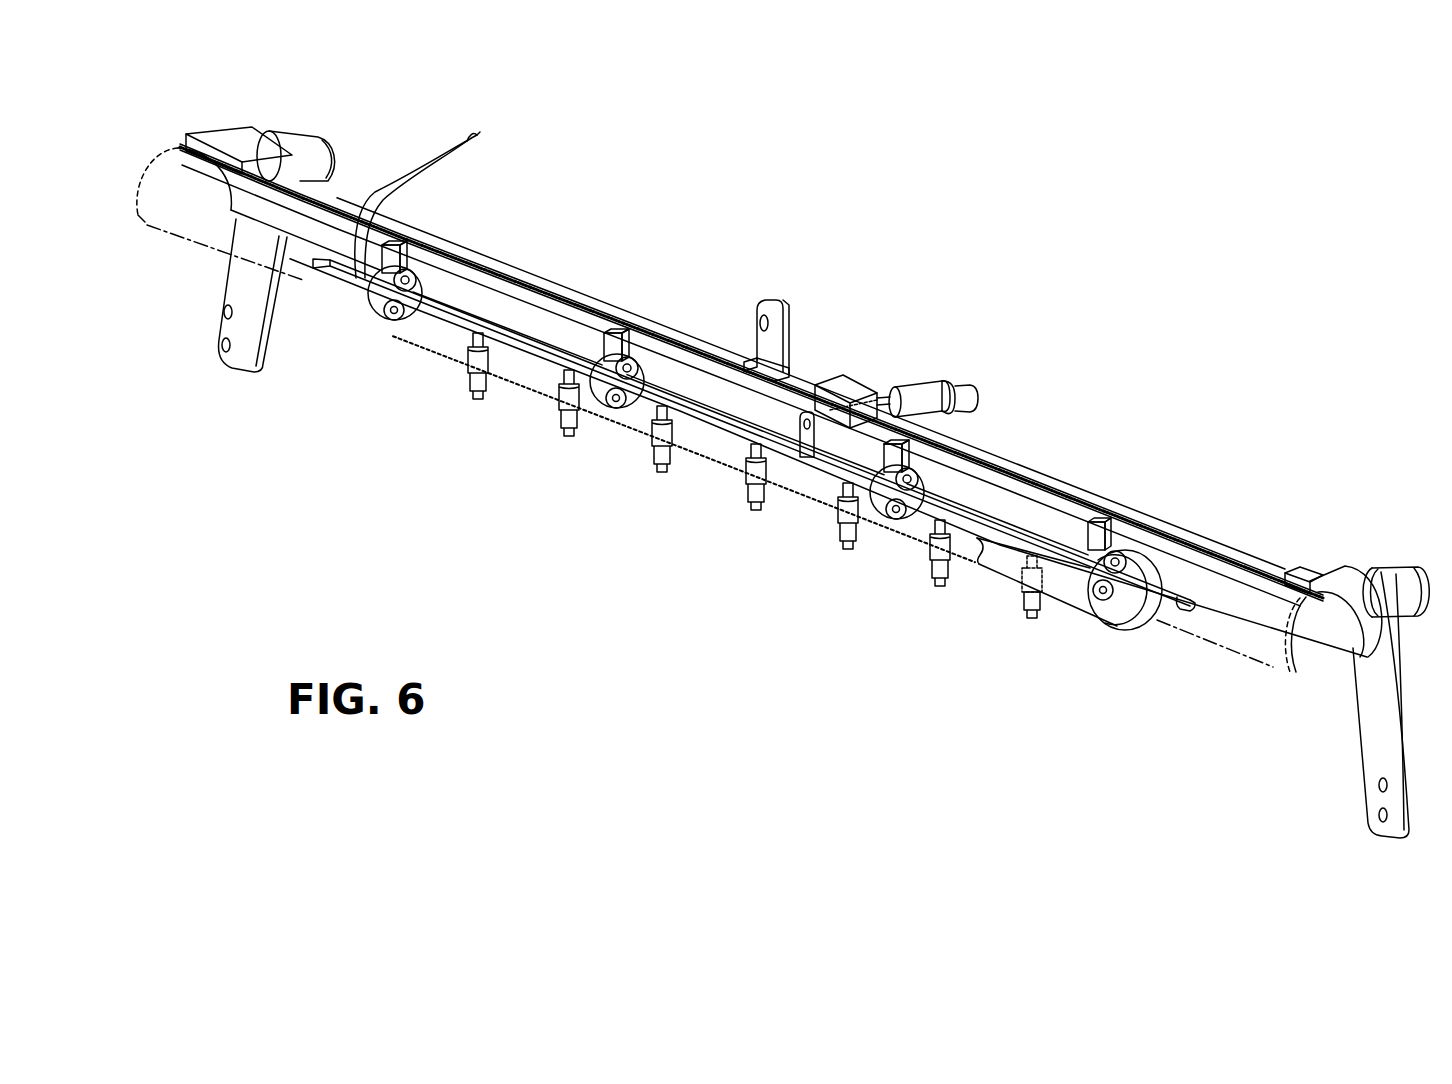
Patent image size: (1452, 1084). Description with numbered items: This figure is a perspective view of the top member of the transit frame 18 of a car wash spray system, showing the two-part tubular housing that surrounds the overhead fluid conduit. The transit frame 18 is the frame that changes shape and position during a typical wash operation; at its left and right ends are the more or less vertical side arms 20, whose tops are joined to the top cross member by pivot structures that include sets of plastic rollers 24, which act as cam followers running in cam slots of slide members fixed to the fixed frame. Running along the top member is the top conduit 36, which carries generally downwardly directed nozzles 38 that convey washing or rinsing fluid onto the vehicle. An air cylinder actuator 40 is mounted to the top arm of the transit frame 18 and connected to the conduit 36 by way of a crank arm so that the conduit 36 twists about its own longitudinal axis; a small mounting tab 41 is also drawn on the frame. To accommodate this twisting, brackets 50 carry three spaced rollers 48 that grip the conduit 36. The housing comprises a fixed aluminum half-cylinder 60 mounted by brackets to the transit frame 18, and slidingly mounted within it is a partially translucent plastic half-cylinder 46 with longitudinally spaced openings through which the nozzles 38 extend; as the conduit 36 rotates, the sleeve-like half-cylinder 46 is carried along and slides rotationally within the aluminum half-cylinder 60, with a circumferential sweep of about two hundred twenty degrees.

The transit frame 18 is at (1013, 463).
The side arms 20 is at (243, 358).
The rollers 24 is at (319, 147).
The top conduit 36 is at (978, 528).
The nozzles 38 is at (842, 531).
The air cylinder actuator 40 is at (927, 397).
The mounting tab 41 is at (798, 423).
The translucent half-cylinder 46 is at (538, 381).
The rollers 48 is at (416, 259).
The brackets 50 is at (619, 343).
The aluminum half-cylinder 60 is at (1154, 518).